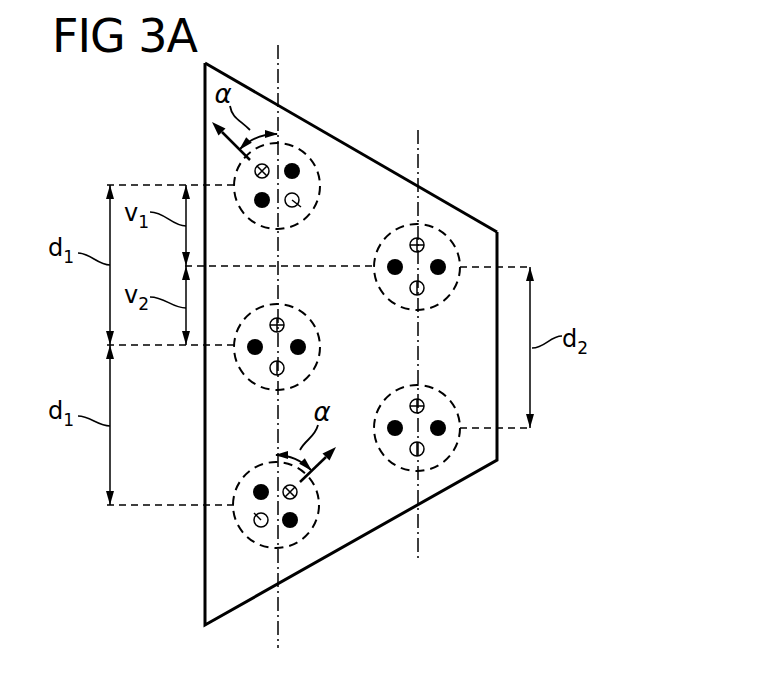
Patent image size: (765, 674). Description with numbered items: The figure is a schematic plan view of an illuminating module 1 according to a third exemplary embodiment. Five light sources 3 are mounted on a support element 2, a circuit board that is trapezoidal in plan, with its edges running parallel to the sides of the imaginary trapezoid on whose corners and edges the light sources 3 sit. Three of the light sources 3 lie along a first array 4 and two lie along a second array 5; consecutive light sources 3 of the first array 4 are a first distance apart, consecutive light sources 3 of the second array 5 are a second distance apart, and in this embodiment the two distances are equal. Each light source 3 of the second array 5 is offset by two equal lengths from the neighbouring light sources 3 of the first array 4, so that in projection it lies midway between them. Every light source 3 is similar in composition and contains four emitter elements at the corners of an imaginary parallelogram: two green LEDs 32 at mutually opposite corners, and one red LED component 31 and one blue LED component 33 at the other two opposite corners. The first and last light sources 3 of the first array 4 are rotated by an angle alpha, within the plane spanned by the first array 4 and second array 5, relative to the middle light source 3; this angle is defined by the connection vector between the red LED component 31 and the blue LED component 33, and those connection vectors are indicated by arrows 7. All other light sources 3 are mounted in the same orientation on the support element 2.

The illuminating module 1 is at (369, 330).
The support element 2 is at (461, 217).
The light source 3 is at (322, 180).
The first array 4 is at (282, 62).
The second array 5 is at (421, 137).
The arrows 7 is at (329, 380).
The red LED component 31 is at (284, 368).
The green LED 32 is at (306, 347).
The blue LED component 33 is at (268, 320).